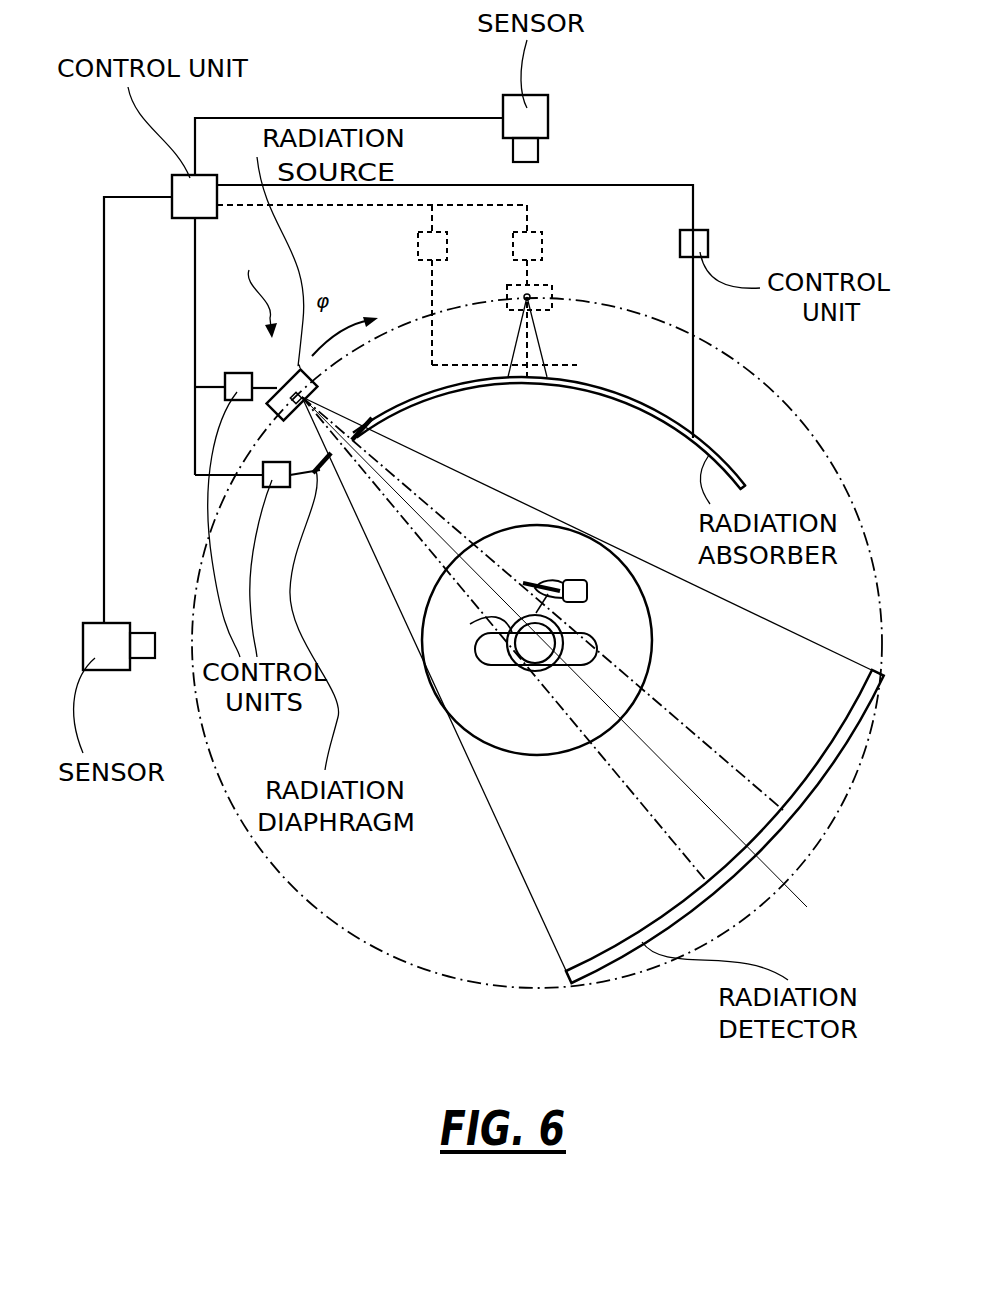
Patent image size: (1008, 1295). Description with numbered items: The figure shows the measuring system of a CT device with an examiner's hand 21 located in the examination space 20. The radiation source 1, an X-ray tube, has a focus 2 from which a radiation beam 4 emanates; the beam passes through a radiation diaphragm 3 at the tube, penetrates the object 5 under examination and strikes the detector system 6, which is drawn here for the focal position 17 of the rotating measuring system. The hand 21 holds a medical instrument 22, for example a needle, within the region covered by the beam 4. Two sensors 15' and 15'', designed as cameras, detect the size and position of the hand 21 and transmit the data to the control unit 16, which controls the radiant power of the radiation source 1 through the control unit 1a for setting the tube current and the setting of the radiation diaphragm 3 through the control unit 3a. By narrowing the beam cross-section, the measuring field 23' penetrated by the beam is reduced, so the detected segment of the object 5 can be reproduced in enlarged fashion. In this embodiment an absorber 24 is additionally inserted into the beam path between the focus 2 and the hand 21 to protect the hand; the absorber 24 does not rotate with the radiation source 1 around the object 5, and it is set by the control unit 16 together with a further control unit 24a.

The radiation source 1 is at (318, 384).
The control unit for setting the tube current 1a is at (240, 373).
The focus 2 is at (283, 403).
The radiation diaphragm 3 is at (368, 425).
The control unit for setting the radiation stop 3a is at (275, 489).
The radiation beam 4 is at (363, 548).
The object under examination 5 is at (575, 645).
The detector system 6 is at (675, 916).
The sensor 15' is at (119, 671).
The sensor 15'' is at (559, 128).
The control unit 16 is at (183, 176).
The focal position 17 is at (256, 290).
The examination space 20 is at (485, 745).
The examiner's hand 21 is at (578, 582).
The medical instrument 22 is at (528, 590).
The measuring field 23' is at (474, 628).
The absorber 24 is at (736, 470).
The control unit for the absorber 24a is at (708, 241).